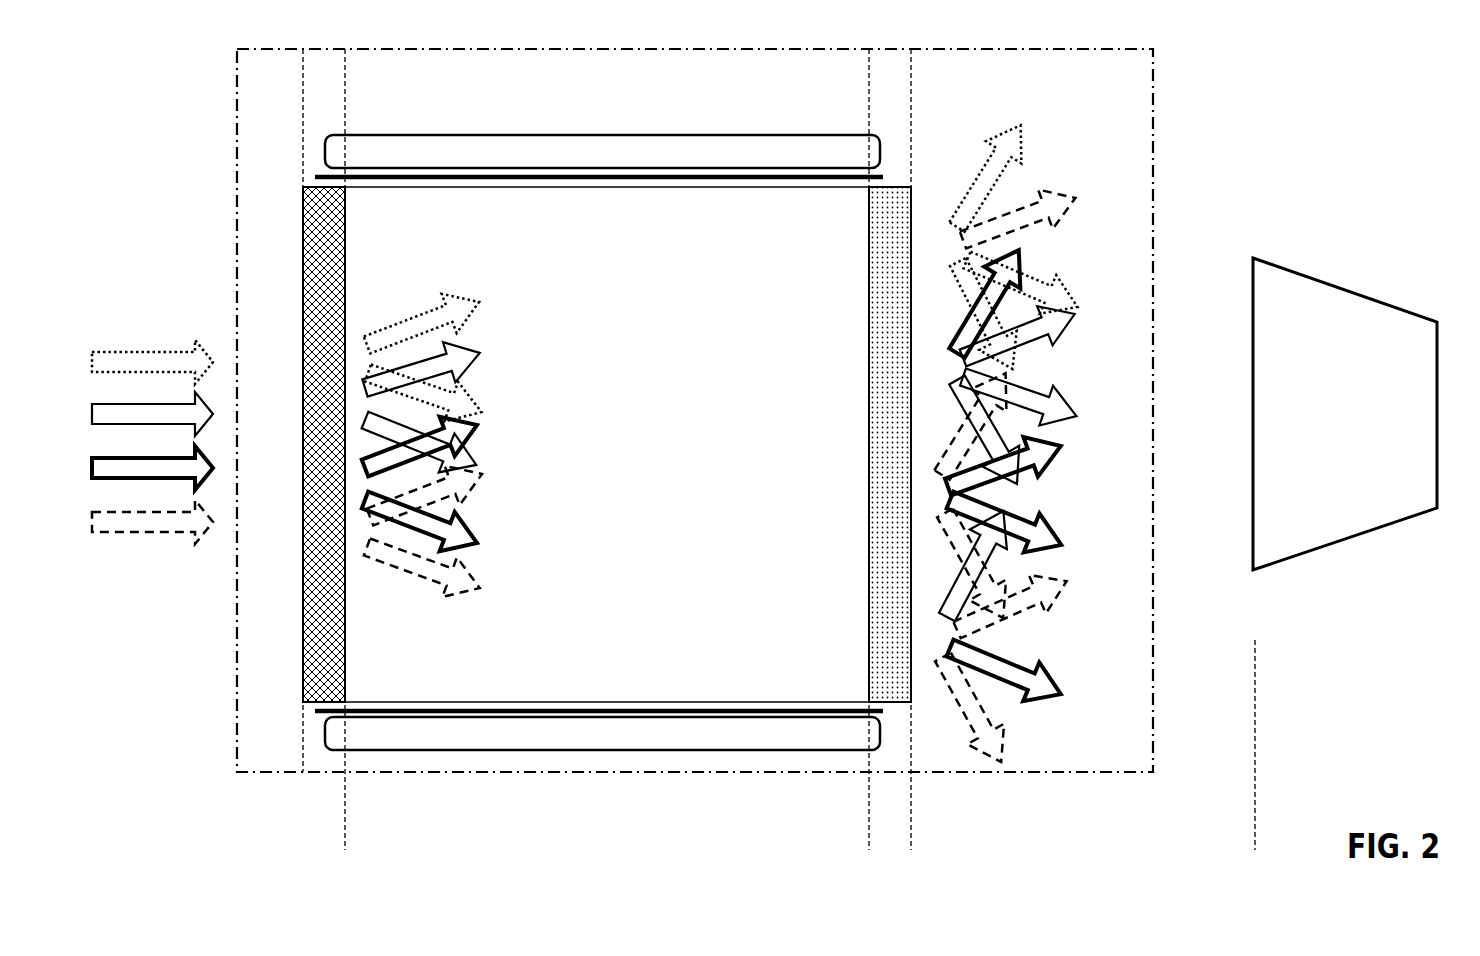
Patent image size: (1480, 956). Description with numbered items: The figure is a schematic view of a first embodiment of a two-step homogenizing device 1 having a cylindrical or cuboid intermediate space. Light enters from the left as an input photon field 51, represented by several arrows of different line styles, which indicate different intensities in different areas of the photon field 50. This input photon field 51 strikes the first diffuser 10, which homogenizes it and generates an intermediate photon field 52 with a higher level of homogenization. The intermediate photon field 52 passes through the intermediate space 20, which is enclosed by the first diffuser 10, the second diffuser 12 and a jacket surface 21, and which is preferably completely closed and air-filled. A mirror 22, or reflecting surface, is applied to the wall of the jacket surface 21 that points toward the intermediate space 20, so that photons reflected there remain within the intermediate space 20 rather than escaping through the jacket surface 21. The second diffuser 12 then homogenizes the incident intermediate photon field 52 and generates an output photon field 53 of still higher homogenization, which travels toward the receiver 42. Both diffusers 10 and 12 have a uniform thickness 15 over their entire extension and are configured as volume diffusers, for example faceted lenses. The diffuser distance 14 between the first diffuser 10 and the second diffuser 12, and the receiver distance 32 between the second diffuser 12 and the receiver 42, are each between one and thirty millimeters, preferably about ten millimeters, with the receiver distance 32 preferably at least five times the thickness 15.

The two-step homogenizing device 1 is at (234, 665).
The first diffuser 10 is at (320, 262).
The second diffuser 12 is at (896, 248).
The diffuser distance 14 is at (868, 808).
The thickness 15 is at (344, 103).
The intermediate space 20 is at (712, 500).
The jacket surface 21 is at (764, 160).
The mirror 22 is at (460, 176).
The receiver distance 32 is at (912, 808).
The receiver 42 is at (1337, 283).
The photon field 50 is at (601, 431).
The input photon field 51 is at (177, 344).
The intermediate photon field 52 is at (446, 293).
The output photon field 53 is at (1035, 180).